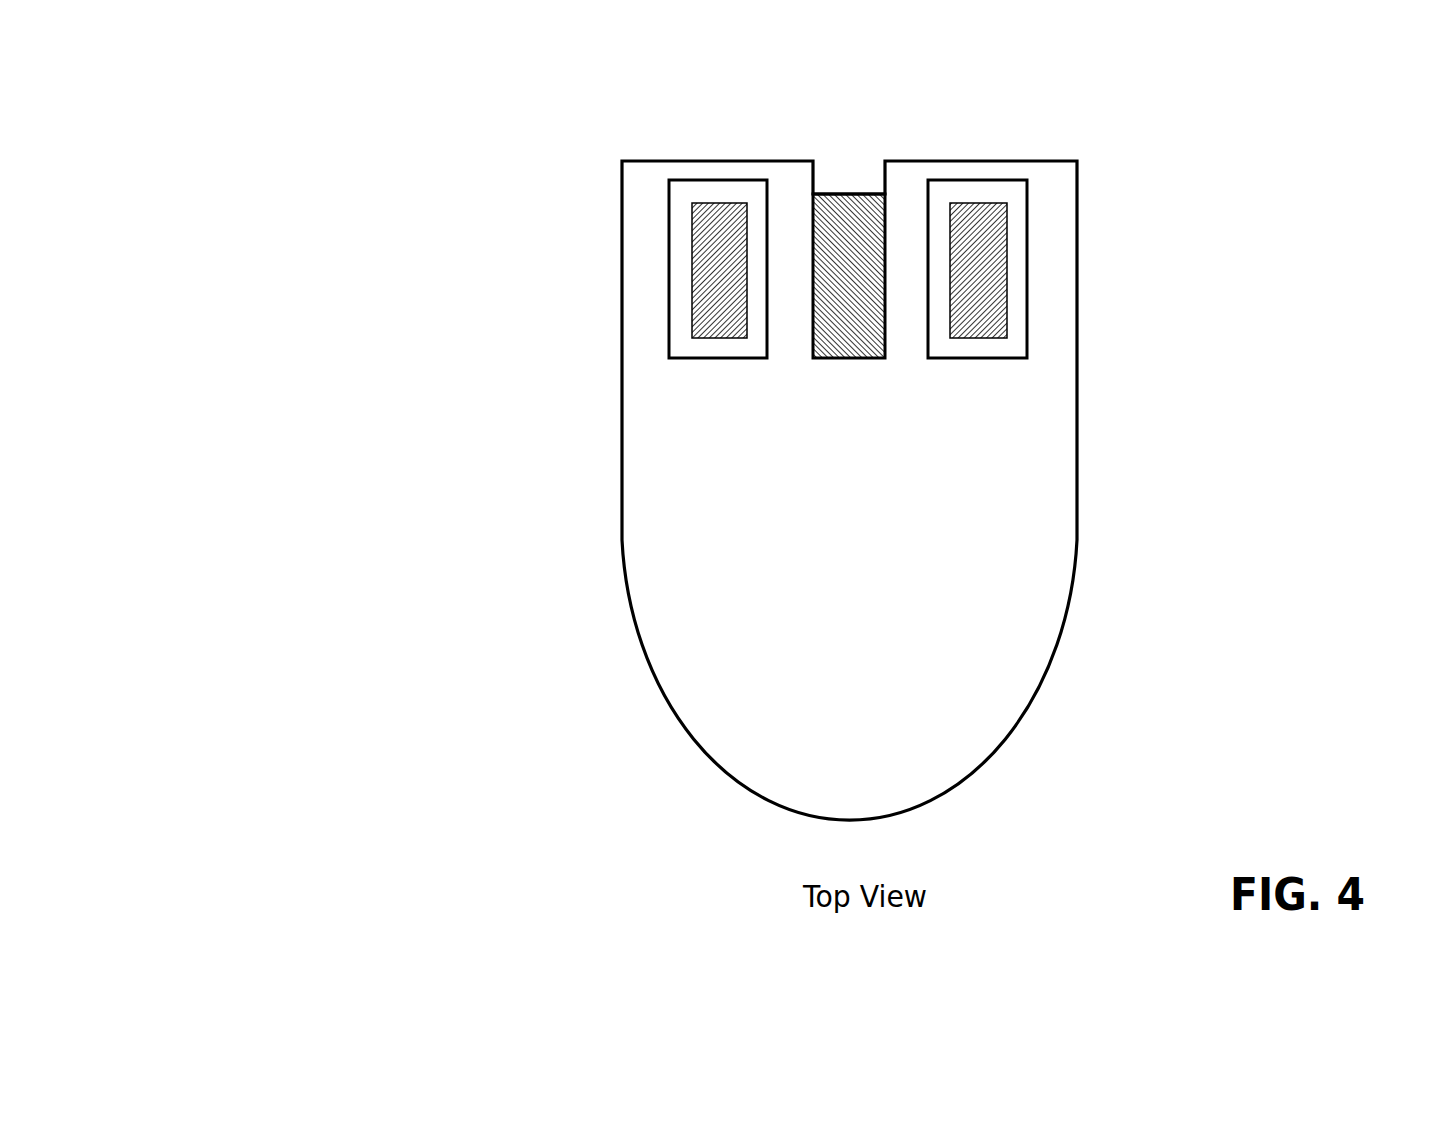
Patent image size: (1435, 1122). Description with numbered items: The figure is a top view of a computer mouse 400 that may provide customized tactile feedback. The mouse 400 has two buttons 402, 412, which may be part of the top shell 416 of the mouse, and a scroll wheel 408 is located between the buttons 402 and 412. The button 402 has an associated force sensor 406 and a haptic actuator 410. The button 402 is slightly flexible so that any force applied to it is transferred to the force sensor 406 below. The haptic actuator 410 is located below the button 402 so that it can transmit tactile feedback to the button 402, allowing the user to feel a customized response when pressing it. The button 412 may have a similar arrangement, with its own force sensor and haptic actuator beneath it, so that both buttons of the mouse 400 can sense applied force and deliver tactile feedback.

The computer mouse 400 is at (240, 118).
The button 402 is at (653, 192).
The force sensor 406 is at (652, 263).
The scroll wheel 408 is at (859, 163).
The haptic actuator 410 is at (724, 358).
The button 412 is at (1055, 195).
The top shell 416 is at (1047, 466).